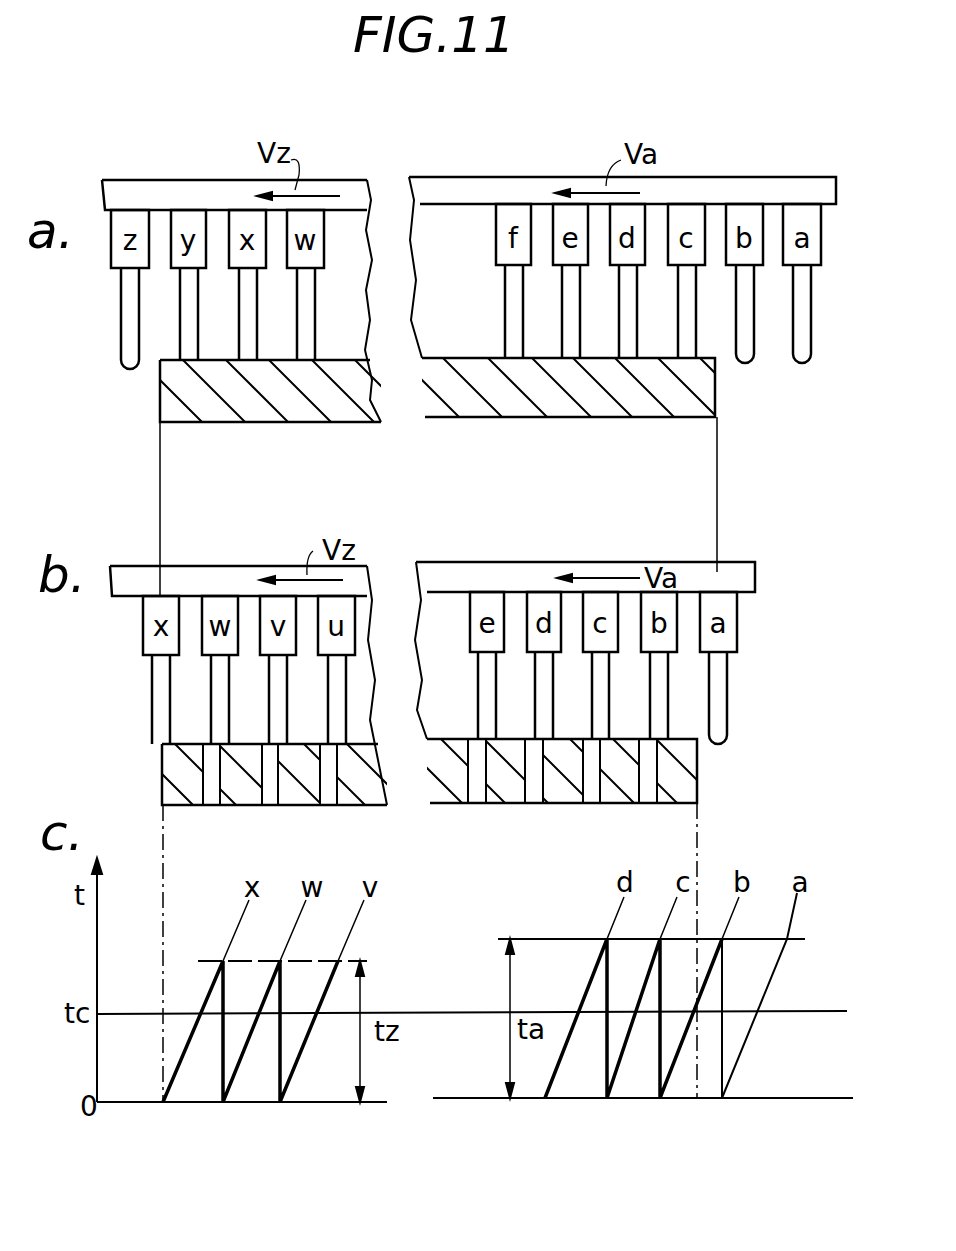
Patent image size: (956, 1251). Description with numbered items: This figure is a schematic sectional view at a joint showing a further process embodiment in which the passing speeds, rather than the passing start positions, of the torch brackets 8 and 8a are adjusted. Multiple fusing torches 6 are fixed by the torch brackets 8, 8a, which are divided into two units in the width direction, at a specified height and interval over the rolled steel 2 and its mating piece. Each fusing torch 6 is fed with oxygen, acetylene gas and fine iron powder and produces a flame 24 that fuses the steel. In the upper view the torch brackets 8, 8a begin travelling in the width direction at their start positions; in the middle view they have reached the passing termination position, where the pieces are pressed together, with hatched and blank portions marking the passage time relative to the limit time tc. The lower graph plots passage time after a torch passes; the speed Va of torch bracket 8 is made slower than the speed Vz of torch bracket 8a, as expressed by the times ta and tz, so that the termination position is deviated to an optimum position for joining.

The torch bracket 8a is at (206, 190).
The torch bracket 8 is at (577, 184).
The fusing torch 6 is at (768, 220).
The flame 24 is at (798, 352).
The rolled steel 2 is at (625, 405).